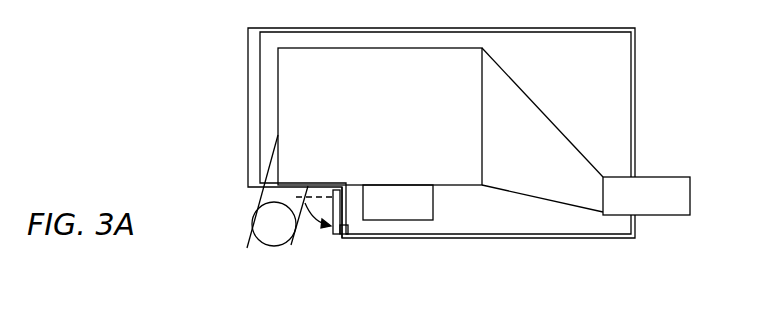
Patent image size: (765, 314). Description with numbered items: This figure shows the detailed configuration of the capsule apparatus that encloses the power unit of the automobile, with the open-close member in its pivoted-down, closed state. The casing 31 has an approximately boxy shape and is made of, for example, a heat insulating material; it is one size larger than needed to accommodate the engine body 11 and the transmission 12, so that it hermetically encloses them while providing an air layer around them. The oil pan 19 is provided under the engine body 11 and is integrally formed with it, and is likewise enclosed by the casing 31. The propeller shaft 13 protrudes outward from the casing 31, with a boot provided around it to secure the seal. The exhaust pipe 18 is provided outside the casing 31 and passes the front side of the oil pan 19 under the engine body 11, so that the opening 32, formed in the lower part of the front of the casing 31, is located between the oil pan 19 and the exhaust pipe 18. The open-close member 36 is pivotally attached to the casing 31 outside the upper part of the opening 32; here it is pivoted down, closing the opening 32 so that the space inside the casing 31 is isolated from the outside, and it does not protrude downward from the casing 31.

The engine body 11 is at (484, 106).
The transmission 12 is at (533, 102).
The propeller shaft 13 is at (663, 183).
The exhaust pipe 18 is at (263, 233).
The oil pan 19 is at (426, 206).
The casing 31 is at (490, 238).
The opening 32 is at (346, 208).
The open-close member 36 is at (332, 235).